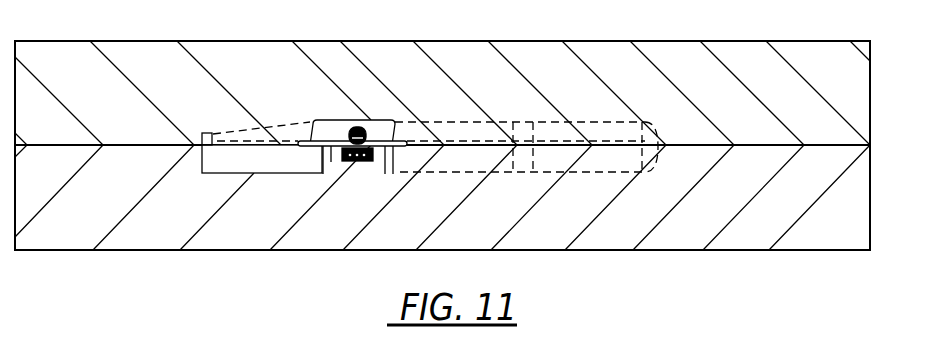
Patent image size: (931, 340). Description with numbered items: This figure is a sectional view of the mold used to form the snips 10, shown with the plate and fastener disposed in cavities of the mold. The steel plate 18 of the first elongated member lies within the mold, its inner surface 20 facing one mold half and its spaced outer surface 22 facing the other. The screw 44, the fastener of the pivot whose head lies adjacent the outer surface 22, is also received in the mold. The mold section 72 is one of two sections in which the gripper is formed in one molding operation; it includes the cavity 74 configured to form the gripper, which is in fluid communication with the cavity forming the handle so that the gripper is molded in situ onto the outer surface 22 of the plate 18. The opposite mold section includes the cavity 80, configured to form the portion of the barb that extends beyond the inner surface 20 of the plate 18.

The snips 10 is at (148, 8).
The steel plate 18 is at (390, 118).
The inner surface 20 is at (325, 140).
The outer surface 22 is at (337, 147).
The screw 44 is at (365, 163).
The mold section 72 is at (73, 240).
The cavity 74 is at (270, 163).
The cavity 80 is at (200, 144).